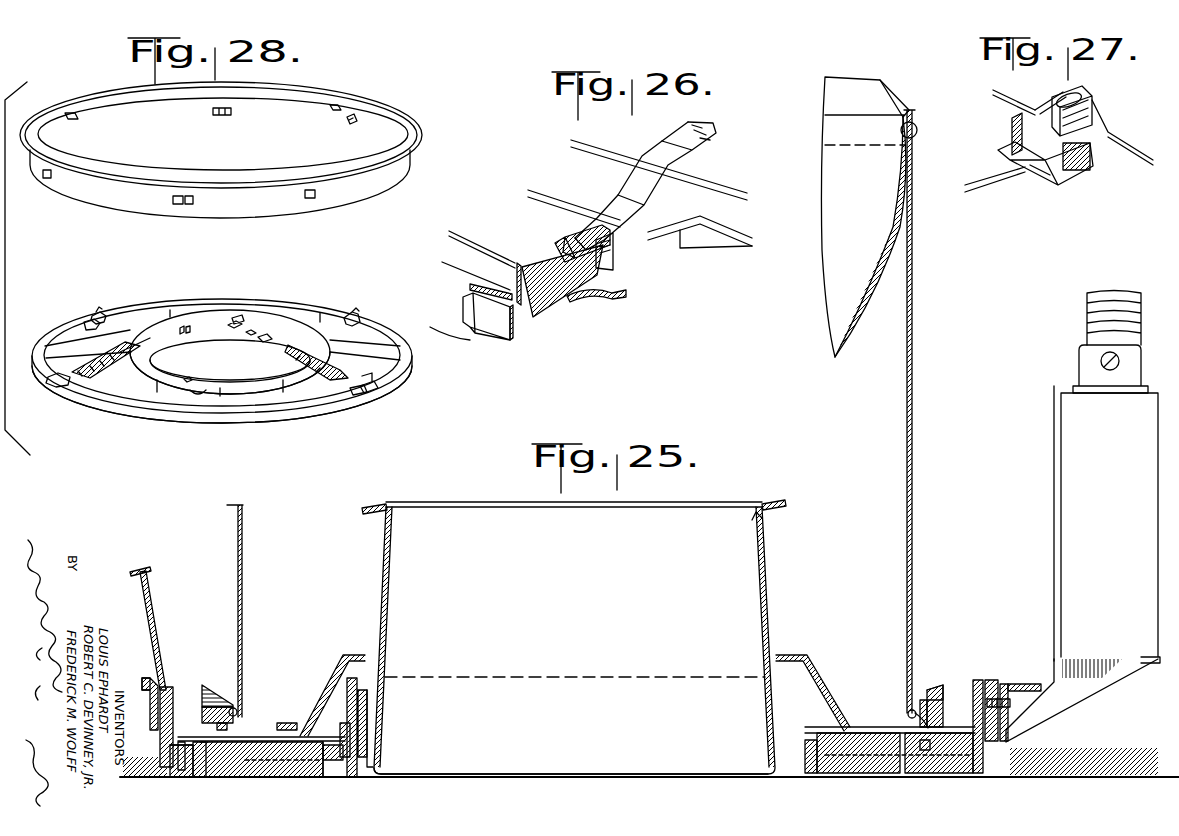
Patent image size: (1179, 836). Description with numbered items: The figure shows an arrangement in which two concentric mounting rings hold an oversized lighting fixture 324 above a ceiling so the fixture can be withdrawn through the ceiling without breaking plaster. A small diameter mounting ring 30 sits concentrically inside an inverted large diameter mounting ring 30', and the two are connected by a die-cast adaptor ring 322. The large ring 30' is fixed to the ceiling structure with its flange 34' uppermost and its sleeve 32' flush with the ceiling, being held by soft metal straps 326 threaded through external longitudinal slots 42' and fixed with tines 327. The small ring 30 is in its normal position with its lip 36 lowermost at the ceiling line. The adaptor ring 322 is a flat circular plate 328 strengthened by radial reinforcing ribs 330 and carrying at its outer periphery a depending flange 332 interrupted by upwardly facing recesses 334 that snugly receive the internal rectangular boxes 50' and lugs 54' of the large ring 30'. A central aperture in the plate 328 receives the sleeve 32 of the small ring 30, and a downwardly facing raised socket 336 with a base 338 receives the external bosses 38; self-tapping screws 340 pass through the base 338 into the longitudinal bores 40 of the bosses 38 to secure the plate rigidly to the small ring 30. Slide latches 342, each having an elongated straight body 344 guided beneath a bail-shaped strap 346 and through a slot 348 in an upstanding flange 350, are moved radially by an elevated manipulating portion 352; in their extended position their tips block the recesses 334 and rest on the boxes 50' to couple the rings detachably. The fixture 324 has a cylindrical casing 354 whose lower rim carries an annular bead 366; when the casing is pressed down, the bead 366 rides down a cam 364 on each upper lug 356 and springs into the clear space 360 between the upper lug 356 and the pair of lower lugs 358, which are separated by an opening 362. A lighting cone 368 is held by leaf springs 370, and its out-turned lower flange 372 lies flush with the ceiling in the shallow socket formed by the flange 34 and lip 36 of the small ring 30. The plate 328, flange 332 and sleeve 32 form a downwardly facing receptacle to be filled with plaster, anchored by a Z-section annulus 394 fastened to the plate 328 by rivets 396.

In FIG. 28, the small diameter mounting ring 30 is at (222, 352).
In FIG. 26, the small diameter mounting ring 30 is at (636, 153).
In FIG. 25, the small diameter mounting ring 30 is at (813, 686).
In FIG. 28, the large diameter mounting ring 30' is at (223, 148).
In FIG. 25, the large diameter mounting ring 30' is at (1005, 709).
In FIG. 28, the sleeve 32 is at (144, 316).
In FIG. 26, the sleeve 32 is at (631, 187).
In FIG. 25, the sleeve 32 is at (571, 762).
In FIG. 25, the sleeve 32' is at (166, 774).
In FIG. 25, the flange 34 is at (258, 785).
In FIG. 25, the flange 34' is at (135, 697).
In FIG. 25, the lip 36 is at (330, 773).
In FIG. 25, the external bosses 38 is at (822, 774).
In FIG. 25, the longitudinal bores 40 is at (350, 765).
In FIG. 25, the external longitudinal slots 42' is at (166, 687).
In FIG. 28, the internal rectangular boxes 50' is at (236, 124).
In FIG. 25, the internal rectangular boxes 50' is at (224, 772).
In FIG. 28, the lugs 54' is at (347, 138).
In FIG. 28, the adaptor ring 322 is at (384, 319).
In FIG. 26, the adaptor ring 322 is at (577, 310).
In FIG. 27, the adaptor ring 322 is at (1012, 83).
In FIG. 25, the lighting fixture 324 is at (925, 251).
In FIG. 25, the soft metal straps 326 is at (160, 628).
In FIG. 25, the tines 327 is at (160, 732).
In FIG. 28, the flat circular plate 328 is at (390, 376).
In FIG. 26, the flat circular plate 328 is at (608, 298).
In FIG. 27, the flat circular plate 328 is at (1120, 185).
In FIG. 25, the flat circular plate 328 is at (306, 735).
In FIG. 28, the radial reinforcing ribs 330 is at (346, 318).
In FIG. 27, the radial reinforcing ribs 330 is at (1002, 176).
In FIG. 28, the depending flange 332 is at (286, 414).
In FIG. 26, the depending flange 332 is at (490, 350).
In FIG. 25, the depending flange 332 is at (182, 772).
In FIG. 26, the recesses 334 is at (488, 332).
In FIG. 26, the raised socket 336 is at (684, 248).
In FIG. 25, the raised socket 336 is at (322, 750).
In FIG. 26, the base 338 is at (700, 222).
In FIG. 25, the base 338 is at (815, 725).
In FIG. 28, the self-tapping screws 340 is at (187, 378).
In FIG. 25, the self-tapping screws 340 is at (346, 722).
In FIG. 26, the slide latches 342 is at (663, 130).
In FIG. 26, the elongated straight body 344 is at (620, 242).
In FIG. 26, the bail-shaped strap 346 is at (576, 231).
In FIG. 26, the slot 348 is at (478, 287).
In FIG. 25, the slot 348 is at (196, 727).
In FIG. 28, the upstanding flange 350 is at (123, 393).
In FIG. 26, the upstanding flange 350 is at (512, 262).
In FIG. 27, the upstanding flange 350 is at (1040, 90).
In FIG. 25, the upstanding flange 350 is at (202, 707).
In FIG. 26, the manipulating portion 352 is at (700, 150).
In FIG. 25, the manipulating portion 352 is at (340, 655).
In FIG. 25, the cylindrical casing 354 is at (915, 450).
In FIG. 28, the upper lug 356 is at (102, 312).
In FIG. 27, the upper lug 356 is at (1080, 110).
In FIG. 25, the upper lug 356 is at (943, 700).
In FIG. 28, the lower lugs 358 is at (86, 323).
In FIG. 27, the lower lugs 358 is at (1012, 125).
In FIG. 25, the lower lugs 358 is at (912, 715).
In FIG. 25, the clear space 360 is at (236, 710).
In FIG. 27, the opening 362 is at (1045, 170).
In FIG. 27, the cam 364 is at (1012, 142).
In FIG. 25, the cam 364 is at (941, 688).
In FIG. 25, the annular bead 366 is at (922, 700).
In FIG. 25, the lighting cone 368 is at (766, 522).
In FIG. 25, the leaf springs 370 is at (382, 583).
In FIG. 25, the out-turned lower flange 372 is at (332, 762).
In FIG. 25, the annulus 394 is at (893, 760).
In FIG. 25, the rivets 396 is at (926, 752).